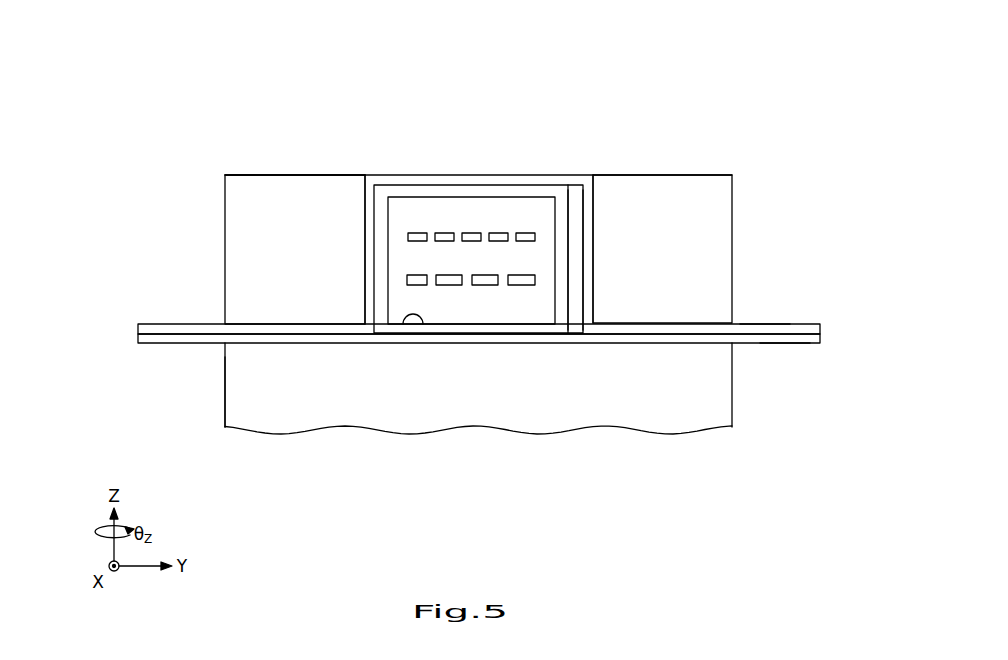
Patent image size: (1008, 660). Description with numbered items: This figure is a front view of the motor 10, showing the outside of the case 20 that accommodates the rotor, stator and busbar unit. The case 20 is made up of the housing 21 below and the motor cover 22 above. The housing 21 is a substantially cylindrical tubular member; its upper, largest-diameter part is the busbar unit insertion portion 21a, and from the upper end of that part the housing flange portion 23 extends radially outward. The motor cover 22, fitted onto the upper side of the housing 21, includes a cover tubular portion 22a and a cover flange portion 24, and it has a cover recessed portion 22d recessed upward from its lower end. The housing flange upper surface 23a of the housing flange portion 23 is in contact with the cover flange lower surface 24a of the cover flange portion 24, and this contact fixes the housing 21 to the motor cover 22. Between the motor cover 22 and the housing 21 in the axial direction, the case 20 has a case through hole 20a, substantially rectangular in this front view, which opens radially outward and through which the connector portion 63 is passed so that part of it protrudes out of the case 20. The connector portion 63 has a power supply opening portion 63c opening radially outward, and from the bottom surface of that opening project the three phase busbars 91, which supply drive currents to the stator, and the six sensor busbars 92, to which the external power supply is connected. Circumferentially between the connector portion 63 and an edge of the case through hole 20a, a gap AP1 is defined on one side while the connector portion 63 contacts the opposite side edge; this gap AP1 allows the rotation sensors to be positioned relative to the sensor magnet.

The motor 10 is at (815, 91).
The case 20 is at (71, 222).
The case through hole 20a is at (583, 241).
The housing 21 is at (214, 392).
The busbar unit insertion portion 21a is at (250, 357).
The motor cover 22 is at (214, 240).
The cover tubular portion 22a is at (243, 203).
The cover recessed portion 22d is at (375, 220).
The housing flange portion 23 is at (819, 338).
The housing flange upper surface 23a is at (782, 339).
The cover flange portion 24 is at (819, 331).
The cover flange lower surface 24a is at (754, 328).
The connector portion 63 is at (572, 215).
The power supply opening portion 63c is at (422, 316).
The phase busbars 91 is at (448, 285).
The sensor busbars 92 is at (415, 275).
The gap AP1 is at (578, 304).